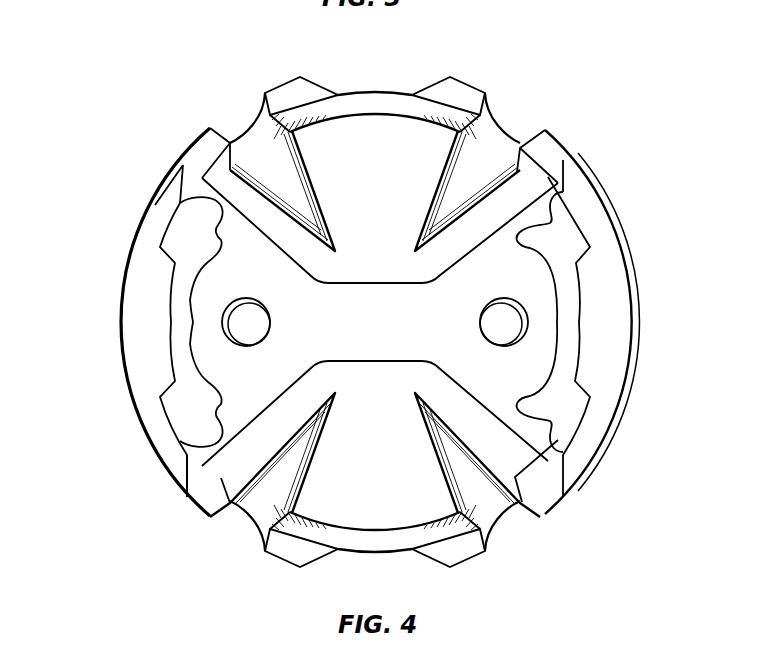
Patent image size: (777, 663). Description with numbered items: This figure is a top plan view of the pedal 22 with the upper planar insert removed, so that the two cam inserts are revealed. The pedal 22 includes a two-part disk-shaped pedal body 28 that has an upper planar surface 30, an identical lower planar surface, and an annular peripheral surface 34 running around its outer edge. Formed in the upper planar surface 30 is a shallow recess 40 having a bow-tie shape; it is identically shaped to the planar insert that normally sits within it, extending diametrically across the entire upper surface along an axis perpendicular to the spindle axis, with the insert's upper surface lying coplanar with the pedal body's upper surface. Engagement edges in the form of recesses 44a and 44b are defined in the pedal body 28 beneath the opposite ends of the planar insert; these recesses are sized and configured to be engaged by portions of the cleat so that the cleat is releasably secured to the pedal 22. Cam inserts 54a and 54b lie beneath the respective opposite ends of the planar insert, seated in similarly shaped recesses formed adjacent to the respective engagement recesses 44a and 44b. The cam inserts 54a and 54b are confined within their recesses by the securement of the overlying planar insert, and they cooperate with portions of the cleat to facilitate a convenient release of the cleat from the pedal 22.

The pedal 22 is at (639, 78).
The pedal body 28 is at (467, 90).
The upper planar surface 30 is at (378, 127).
The annular peripheral surface 34 is at (283, 83).
The shallow recess 40 is at (507, 385).
The engagement recess 44a is at (142, 312).
The engagement recess 44b is at (603, 245).
The cam insert 54a is at (182, 275).
The cam insert 54b is at (573, 315).